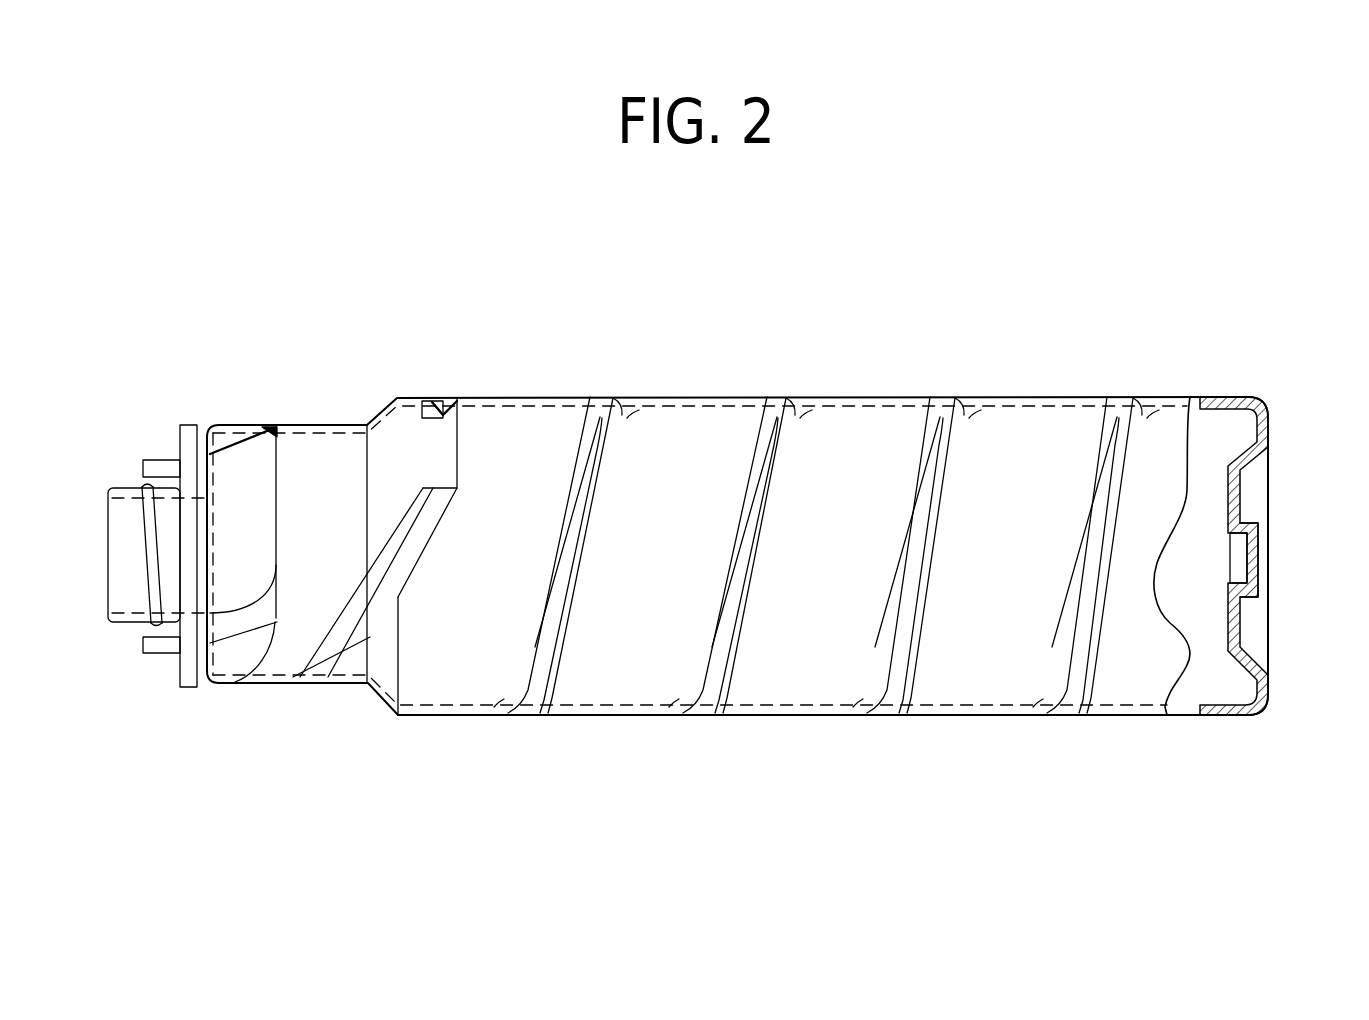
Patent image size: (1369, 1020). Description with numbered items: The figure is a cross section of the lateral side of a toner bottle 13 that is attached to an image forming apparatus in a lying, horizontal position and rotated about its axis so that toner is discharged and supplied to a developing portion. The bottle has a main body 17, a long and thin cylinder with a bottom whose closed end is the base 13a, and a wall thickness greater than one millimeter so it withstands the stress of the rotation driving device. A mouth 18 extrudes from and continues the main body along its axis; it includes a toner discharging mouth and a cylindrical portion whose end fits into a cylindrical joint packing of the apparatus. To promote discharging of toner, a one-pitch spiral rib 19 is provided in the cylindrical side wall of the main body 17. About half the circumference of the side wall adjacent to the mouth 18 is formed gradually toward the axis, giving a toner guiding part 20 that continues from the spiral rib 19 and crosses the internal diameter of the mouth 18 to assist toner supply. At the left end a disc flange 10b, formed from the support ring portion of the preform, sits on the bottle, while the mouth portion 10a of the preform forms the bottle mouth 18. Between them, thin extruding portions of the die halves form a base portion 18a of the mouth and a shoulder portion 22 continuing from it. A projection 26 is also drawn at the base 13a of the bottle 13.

The toner bottle 13 is at (818, 308).
The base 13a is at (1247, 457).
The main body 17 is at (1020, 397).
The spiral rib 19 is at (442, 403).
The toner guiding part 20 is at (317, 627).
The shoulder portion 22 is at (207, 683).
The engagement projection 26 is at (1260, 553).
The support ring portion 10b is at (190, 425).
The mouth 18 is at (122, 623).
The base portion of the mouth portion 18a is at (183, 527).
The mouth portion 10a is at (161, 556).